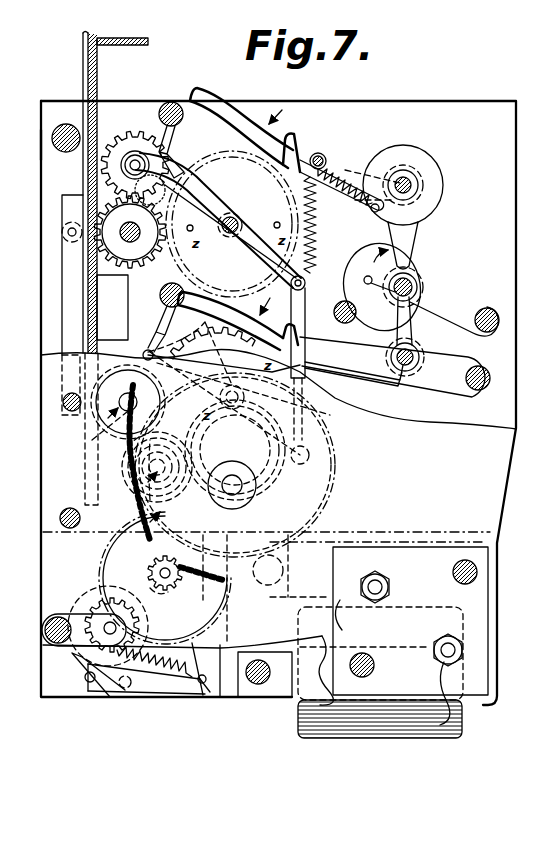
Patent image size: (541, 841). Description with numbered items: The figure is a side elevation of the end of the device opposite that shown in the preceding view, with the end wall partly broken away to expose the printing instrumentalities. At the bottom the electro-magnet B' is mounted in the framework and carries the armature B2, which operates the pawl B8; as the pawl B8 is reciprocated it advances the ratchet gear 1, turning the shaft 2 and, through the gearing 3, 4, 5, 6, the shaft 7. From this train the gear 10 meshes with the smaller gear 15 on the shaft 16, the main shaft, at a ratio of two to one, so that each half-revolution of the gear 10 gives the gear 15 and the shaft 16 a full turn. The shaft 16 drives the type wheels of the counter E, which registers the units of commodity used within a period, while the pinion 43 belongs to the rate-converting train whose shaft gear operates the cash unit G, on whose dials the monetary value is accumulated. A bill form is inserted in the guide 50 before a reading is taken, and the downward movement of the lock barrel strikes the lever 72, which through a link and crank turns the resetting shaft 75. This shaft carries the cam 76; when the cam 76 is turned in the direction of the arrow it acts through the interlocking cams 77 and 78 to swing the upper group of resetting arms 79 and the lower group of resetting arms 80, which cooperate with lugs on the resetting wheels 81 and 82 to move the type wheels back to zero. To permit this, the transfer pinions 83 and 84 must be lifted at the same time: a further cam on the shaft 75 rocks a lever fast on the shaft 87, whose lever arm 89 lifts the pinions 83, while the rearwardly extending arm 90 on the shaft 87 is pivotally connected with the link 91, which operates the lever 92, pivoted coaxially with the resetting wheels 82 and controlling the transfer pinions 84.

The guide 50 is at (97, 88).
The pinion 43 is at (41, 146).
The counter E is at (117, 213).
The lever 72 is at (108, 292).
The transfer pinions 83 is at (203, 210).
The lever arm 89 is at (205, 210).
The resetting wheel 81 is at (230, 221).
The shaft 87 is at (240, 224).
The rearwardly extending arm 90 is at (250, 250).
The upper resetting arms 79 is at (347, 156).
The interlocking cam 77 is at (422, 150).
The resetting shaft 75 is at (410, 278).
The cam 76 is at (424, 293).
The interlocking cam 78 is at (427, 327).
The lower resetting arms 80 is at (395, 366).
The link 91 is at (308, 378).
The lever 92 is at (315, 417).
The gear 10 is at (327, 462).
The shaft 7 is at (243, 487).
The transfer pinions 84 is at (172, 321).
The resetting wheel 82 is at (227, 329).
The cash unit G is at (92, 440).
The gear 15 is at (118, 470).
The shaft 16 is at (143, 508).
The gearing 3 is at (107, 613).
The gearing 6 is at (165, 578).
The gearing 4 is at (140, 602).
The shaft 2 is at (95, 620).
The gearing 5 is at (173, 588).
The pawl B8 is at (68, 665).
The ratchet gear 1 is at (83, 680).
The armature B2 is at (200, 690).
The electro-magnet B' is at (380, 741).